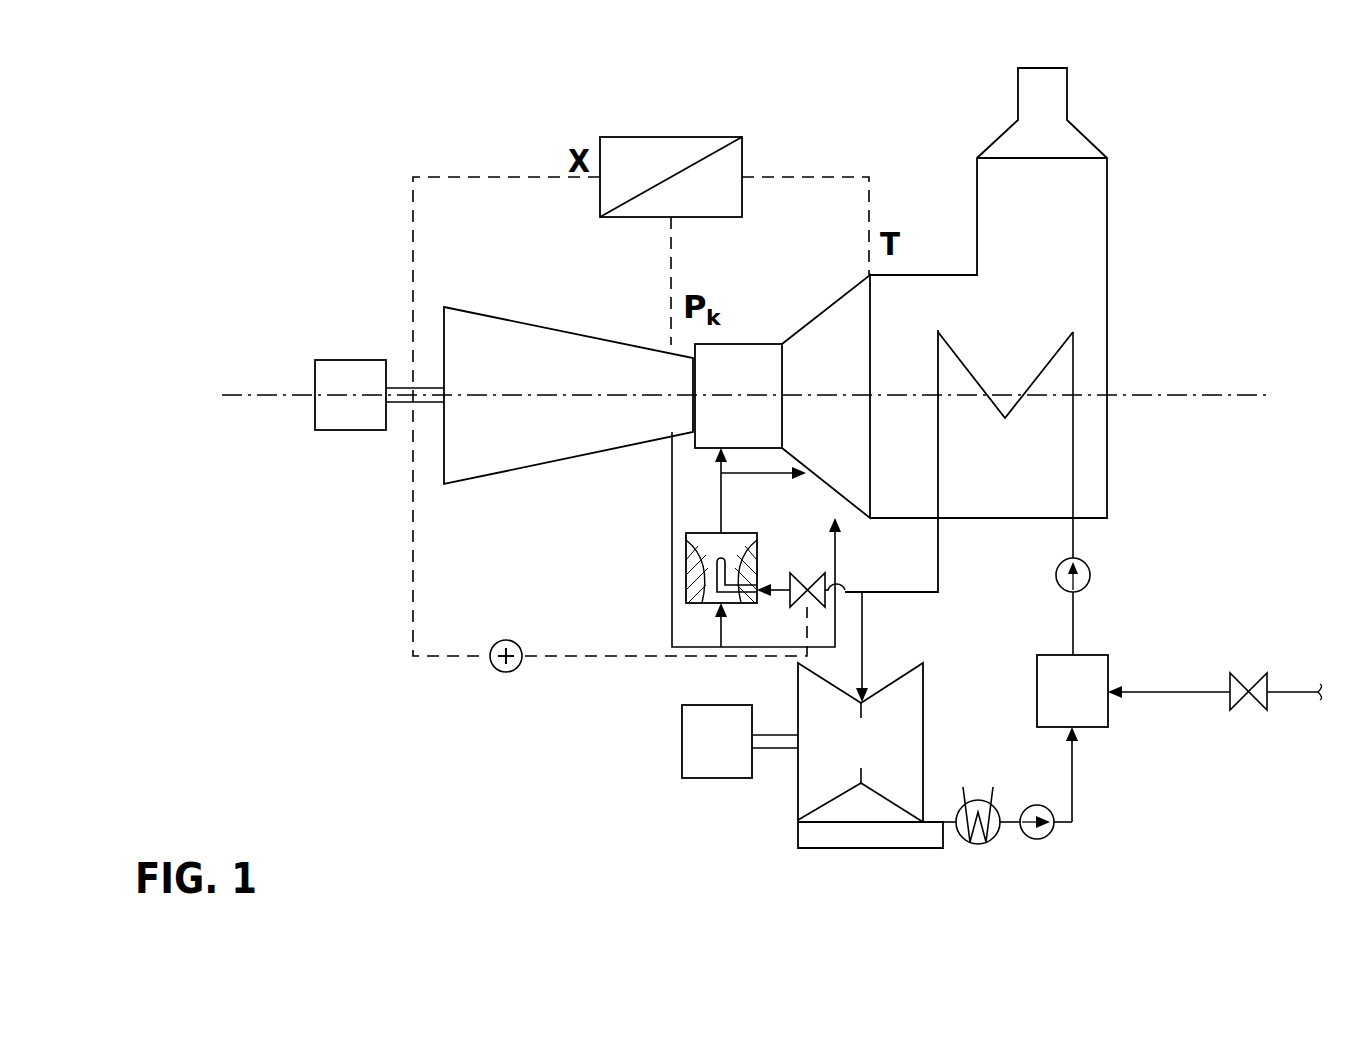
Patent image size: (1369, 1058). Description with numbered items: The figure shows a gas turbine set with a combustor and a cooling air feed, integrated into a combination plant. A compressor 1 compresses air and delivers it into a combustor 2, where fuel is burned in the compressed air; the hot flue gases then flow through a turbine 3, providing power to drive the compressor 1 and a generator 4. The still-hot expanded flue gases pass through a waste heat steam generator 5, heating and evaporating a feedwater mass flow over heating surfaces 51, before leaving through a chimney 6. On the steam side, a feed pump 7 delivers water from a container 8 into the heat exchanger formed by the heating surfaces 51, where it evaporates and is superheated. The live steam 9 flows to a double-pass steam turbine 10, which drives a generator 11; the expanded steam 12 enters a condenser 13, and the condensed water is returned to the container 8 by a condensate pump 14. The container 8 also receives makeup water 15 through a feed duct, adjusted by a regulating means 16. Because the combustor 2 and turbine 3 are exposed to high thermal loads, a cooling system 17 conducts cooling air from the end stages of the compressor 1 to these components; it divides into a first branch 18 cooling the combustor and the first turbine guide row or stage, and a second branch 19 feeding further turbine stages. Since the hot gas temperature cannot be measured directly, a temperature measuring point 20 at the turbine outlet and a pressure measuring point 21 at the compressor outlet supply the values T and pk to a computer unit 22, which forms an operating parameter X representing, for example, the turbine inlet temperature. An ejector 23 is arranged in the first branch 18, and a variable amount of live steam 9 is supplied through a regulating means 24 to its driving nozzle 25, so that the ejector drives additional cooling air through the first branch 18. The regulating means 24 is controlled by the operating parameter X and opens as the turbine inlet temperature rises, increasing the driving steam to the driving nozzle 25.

The compressor 1 is at (545, 378).
The combustor 2 is at (750, 384).
The turbine 3 is at (838, 384).
The generator 4 is at (360, 403).
The waste heat steam generator 5 is at (940, 323).
The chimney 6 is at (1053, 216).
The feed pump 7 is at (1090, 575).
The container 8 is at (1082, 703).
The live steam 9 is at (938, 570).
The double-pass steam turbine 10 is at (879, 757).
The generator 11 is at (736, 755).
The expanded steam 12 is at (902, 848).
The condenser 13 is at (977, 842).
The condensate pump 14 is at (1040, 838).
The makeup water 15 is at (1154, 692).
The regulating means 16 is at (1247, 677).
The cooling system 17 is at (672, 503).
The first branch 18 is at (721, 503).
The second branch 19 is at (835, 562).
The temperature measuring point 20 is at (914, 172).
The pressure measuring point 21 is at (672, 355).
The computer unit 22 is at (697, 137).
The ejector 23 is at (686, 589).
The regulating means 24 is at (808, 582).
The driving nozzle 25 is at (717, 563).
The heating surfaces 51 is at (1055, 376).